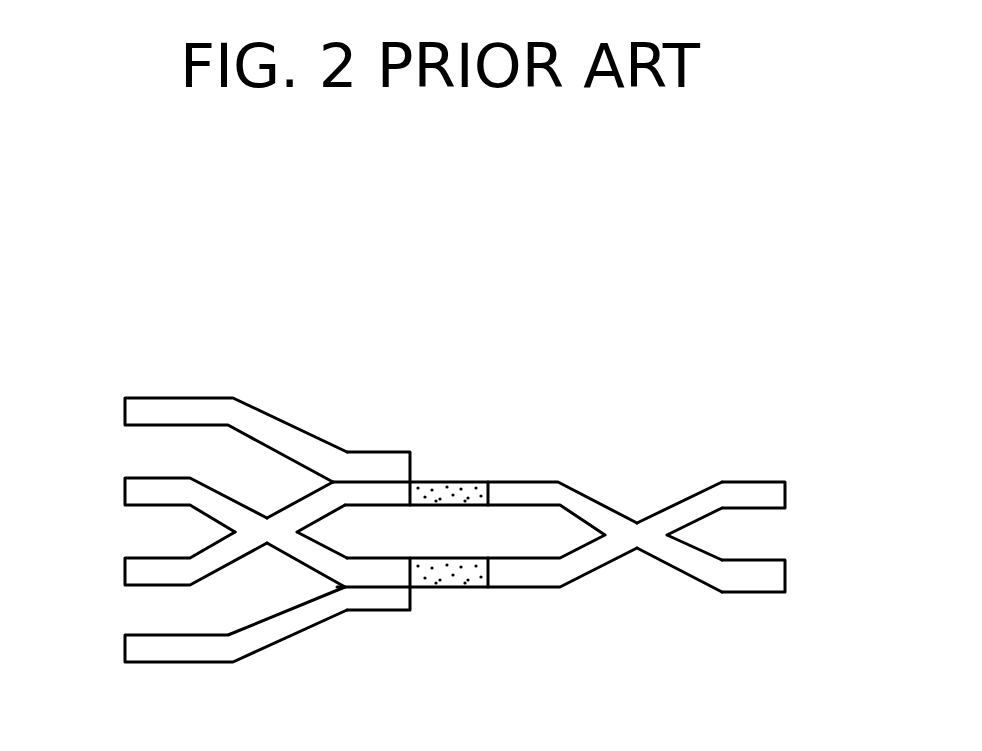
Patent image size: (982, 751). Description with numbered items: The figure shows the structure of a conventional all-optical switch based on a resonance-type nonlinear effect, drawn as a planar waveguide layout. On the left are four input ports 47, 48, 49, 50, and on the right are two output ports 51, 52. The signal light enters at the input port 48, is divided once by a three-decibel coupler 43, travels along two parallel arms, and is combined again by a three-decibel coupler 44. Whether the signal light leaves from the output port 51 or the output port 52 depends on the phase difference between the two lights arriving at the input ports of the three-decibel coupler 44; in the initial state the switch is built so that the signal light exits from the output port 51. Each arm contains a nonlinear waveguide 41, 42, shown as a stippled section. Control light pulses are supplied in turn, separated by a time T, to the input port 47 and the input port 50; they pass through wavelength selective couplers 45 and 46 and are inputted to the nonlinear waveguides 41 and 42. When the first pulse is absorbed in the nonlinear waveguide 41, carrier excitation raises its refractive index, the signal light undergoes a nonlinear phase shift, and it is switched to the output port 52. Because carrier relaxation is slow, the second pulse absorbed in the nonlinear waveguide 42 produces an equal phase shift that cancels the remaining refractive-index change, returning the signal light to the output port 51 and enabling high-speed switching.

The nonlinear waveguide 41 is at (450, 453).
The nonlinear waveguide 42 is at (450, 587).
The 3 dB coupler 43 is at (269, 519).
The 3 dB coupler 44 is at (635, 520).
The wavelength selective coupler 45 is at (347, 452).
The wavelength selective coupler 46 is at (347, 613).
The input port 47 is at (135, 414).
The input port 48 is at (135, 492).
The input port 49 is at (136, 572).
The input port 50 is at (136, 652).
The output port 51 is at (785, 492).
The output port 52 is at (785, 574).